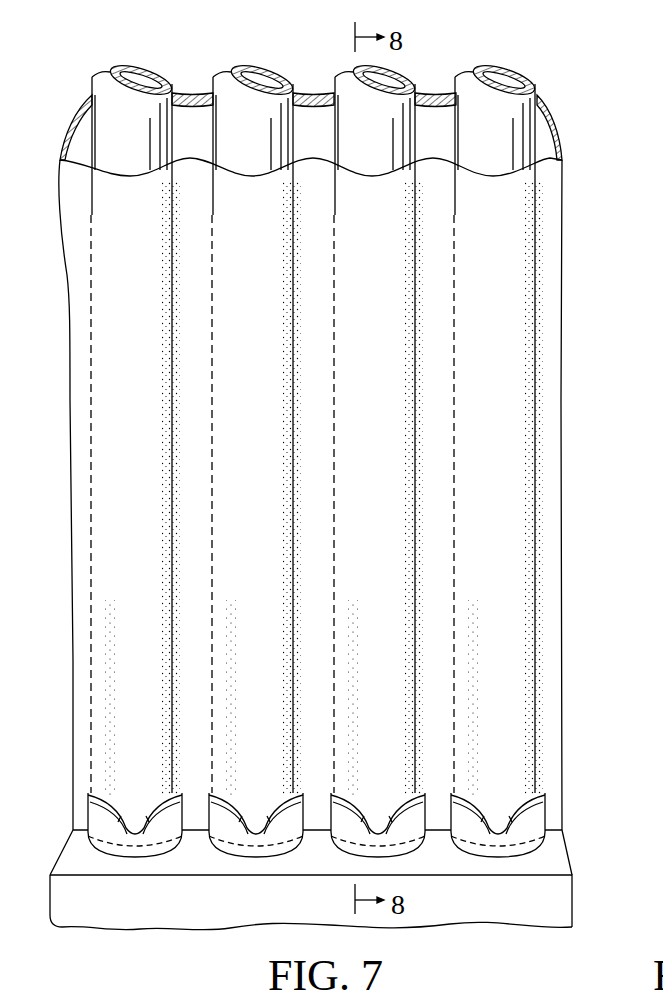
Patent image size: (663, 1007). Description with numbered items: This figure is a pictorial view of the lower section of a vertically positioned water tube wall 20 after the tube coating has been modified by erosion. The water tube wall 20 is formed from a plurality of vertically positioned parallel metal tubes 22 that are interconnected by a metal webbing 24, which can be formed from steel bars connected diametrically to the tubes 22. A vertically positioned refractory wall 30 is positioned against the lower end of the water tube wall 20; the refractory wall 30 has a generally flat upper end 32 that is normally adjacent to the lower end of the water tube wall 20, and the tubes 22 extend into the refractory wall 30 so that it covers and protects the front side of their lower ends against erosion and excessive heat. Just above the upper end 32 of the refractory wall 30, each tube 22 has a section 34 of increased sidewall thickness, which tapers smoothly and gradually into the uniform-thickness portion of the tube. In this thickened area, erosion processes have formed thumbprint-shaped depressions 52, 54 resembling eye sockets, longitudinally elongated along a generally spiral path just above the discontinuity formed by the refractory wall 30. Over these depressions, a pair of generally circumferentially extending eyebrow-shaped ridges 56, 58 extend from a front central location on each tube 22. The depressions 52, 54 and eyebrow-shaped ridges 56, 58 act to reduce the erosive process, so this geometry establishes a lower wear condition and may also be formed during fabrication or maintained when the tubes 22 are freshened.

The water tube wall 20 is at (48, 181).
The metal tubes 22 is at (257, 422).
The metal webbing 24 is at (307, 460).
The refractory wall 30 is at (87, 900).
The upper end 32 is at (75, 853).
The section of increased sidewall thickness 34 is at (540, 750).
The thumbprint-shaped depression 52 is at (100, 818).
The thumbprint-shaped depression 54 is at (165, 825).
The eyebrow-shaped ridge 56 is at (233, 827).
The eyebrow-shaped ridge 58 is at (268, 822).